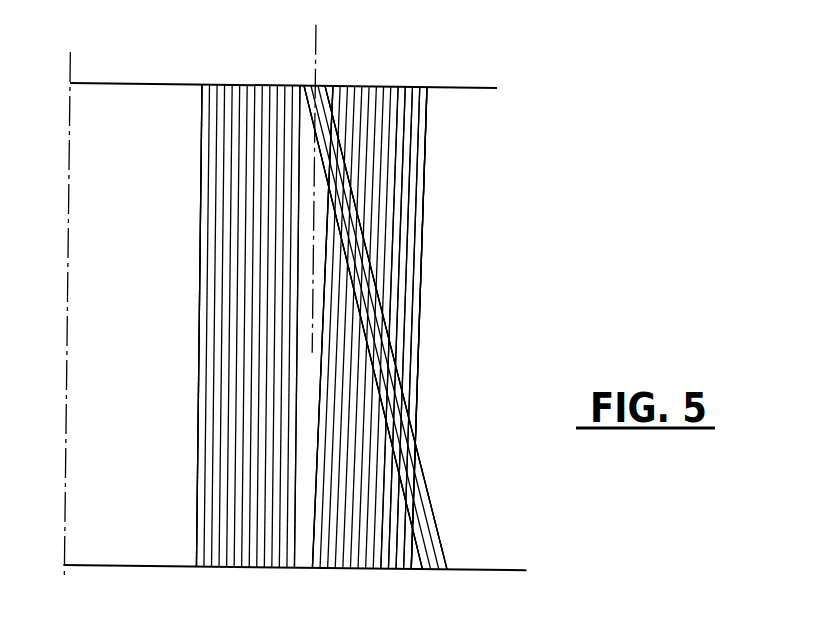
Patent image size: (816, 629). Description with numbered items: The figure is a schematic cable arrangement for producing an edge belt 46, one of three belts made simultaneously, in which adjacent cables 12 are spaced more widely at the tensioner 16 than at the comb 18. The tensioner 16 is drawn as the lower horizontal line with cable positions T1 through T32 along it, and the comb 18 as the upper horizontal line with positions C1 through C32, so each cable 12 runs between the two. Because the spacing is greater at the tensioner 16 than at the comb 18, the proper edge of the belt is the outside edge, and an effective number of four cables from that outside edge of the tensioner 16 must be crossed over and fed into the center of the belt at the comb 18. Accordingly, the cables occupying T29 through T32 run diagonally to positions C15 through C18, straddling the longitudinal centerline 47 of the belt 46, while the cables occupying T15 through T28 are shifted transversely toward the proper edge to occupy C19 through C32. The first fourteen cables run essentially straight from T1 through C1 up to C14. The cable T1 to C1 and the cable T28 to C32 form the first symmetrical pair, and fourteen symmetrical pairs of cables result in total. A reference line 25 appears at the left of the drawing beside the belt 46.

The cables 12 is at (390, 280).
The tensioner 16 is at (508, 566).
The comb 18 is at (483, 89).
The reference center line 25 is at (68, 225).
The belt 46 is at (436, 223).
The longitudinal centerline 47 is at (317, 41).
The comb position C1 is at (202, 83).
The comb position C14 is at (300, 83).
The comb position C15 is at (304, 83).
The comb position C18 is at (325, 83).
The comb position C19 is at (334, 83).
The comb position C32 is at (424, 86).
The tensioner position T1 is at (197, 565).
The tensioner position T15 is at (312, 567).
The tensioner position T28 is at (412, 567).
The tensioner position T29 is at (424, 567).
The tensioner position T32 is at (450, 568).